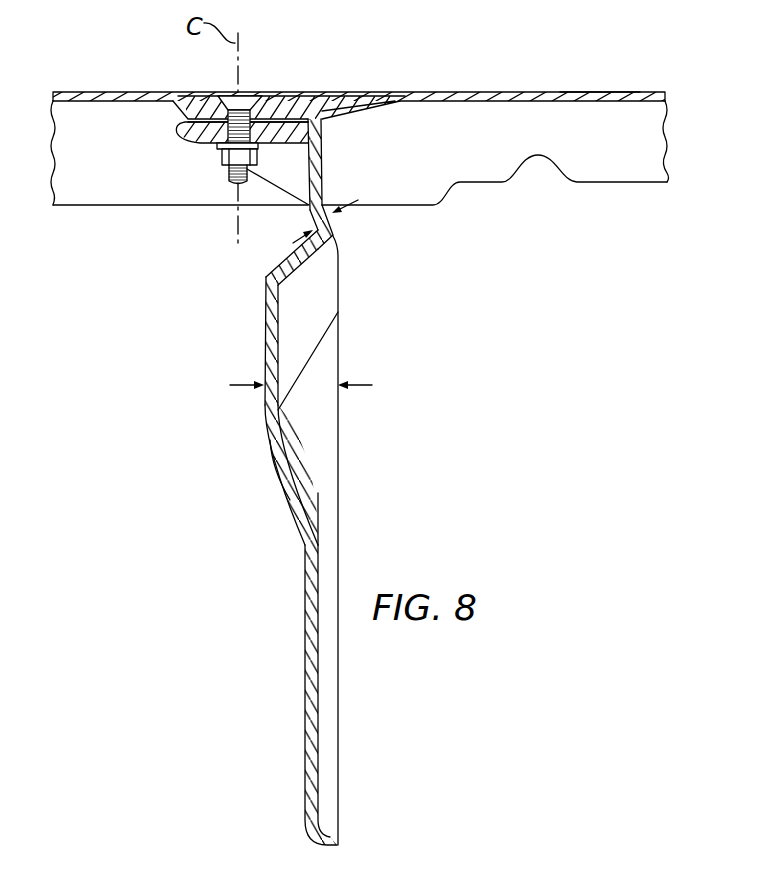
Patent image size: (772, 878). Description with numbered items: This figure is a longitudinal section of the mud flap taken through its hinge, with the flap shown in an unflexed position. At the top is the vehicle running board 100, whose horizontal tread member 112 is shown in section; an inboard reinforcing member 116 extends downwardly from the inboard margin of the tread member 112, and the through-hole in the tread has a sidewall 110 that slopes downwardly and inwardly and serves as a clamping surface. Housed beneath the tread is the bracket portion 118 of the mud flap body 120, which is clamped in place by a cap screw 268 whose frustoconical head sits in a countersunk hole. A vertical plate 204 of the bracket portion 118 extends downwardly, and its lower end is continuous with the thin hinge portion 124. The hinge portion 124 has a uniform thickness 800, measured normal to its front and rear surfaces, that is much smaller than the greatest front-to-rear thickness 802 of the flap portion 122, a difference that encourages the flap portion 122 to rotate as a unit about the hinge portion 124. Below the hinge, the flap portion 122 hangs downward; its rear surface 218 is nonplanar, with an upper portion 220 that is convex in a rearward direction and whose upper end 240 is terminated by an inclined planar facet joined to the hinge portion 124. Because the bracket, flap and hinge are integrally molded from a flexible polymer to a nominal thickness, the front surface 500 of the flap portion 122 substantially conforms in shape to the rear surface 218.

The vehicle running board 100 is at (608, 83).
The tread member 112 is at (537, 90).
The inboard reinforcing member 116 is at (607, 165).
The sidewall 110 is at (364, 112).
The bracket portion 118 is at (287, 130).
The cap screw 268 is at (222, 170).
The vertical plate 204 is at (322, 149).
The hinge portion 124 is at (333, 226).
The hinge thickness 800 is at (308, 214).
The upper end of convex portion 240 is at (266, 270).
The upper portion of rear surface 220 is at (263, 308).
The rear surface 218 is at (265, 412).
The front-to-rear thickness of flap portion 802 is at (317, 387).
The mud flap body 120 is at (270, 497).
The front surface of flap portion 500 is at (327, 477).
The flap portion 122 is at (332, 688).